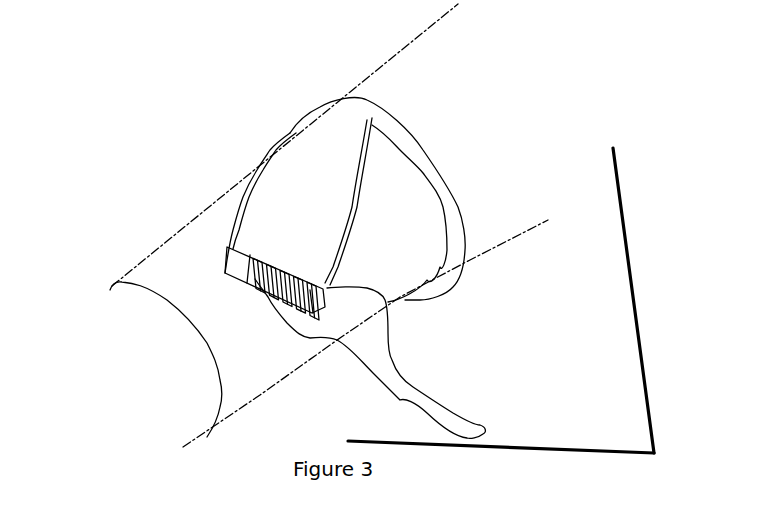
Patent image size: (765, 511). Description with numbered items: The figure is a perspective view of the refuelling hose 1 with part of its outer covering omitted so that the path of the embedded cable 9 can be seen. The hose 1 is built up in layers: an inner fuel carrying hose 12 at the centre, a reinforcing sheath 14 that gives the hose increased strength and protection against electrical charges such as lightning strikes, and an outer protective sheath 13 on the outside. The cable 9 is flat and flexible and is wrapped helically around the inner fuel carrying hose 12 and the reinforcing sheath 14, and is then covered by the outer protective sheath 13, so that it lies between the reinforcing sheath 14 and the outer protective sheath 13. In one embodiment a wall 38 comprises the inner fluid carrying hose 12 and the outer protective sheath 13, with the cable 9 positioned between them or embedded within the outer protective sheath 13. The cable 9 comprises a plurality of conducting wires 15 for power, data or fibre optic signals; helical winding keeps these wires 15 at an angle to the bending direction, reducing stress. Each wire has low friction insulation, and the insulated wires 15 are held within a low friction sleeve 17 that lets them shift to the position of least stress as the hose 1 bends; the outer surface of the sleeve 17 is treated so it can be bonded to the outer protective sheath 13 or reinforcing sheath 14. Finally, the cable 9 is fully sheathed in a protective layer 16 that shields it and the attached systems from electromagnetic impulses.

The refuelling hose 1 is at (565, 320).
The cable 9 is at (307, 175).
The inner fuel carrying hose 12 is at (200, 397).
The outer protective sheath 13 is at (507, 162).
The reinforcing sheath 14 is at (193, 280).
The conducting wires 15 is at (384, 361).
The protective layer 16 is at (267, 173).
The low friction sleeve 17 is at (277, 257).
The wall 38 is at (512, 314).